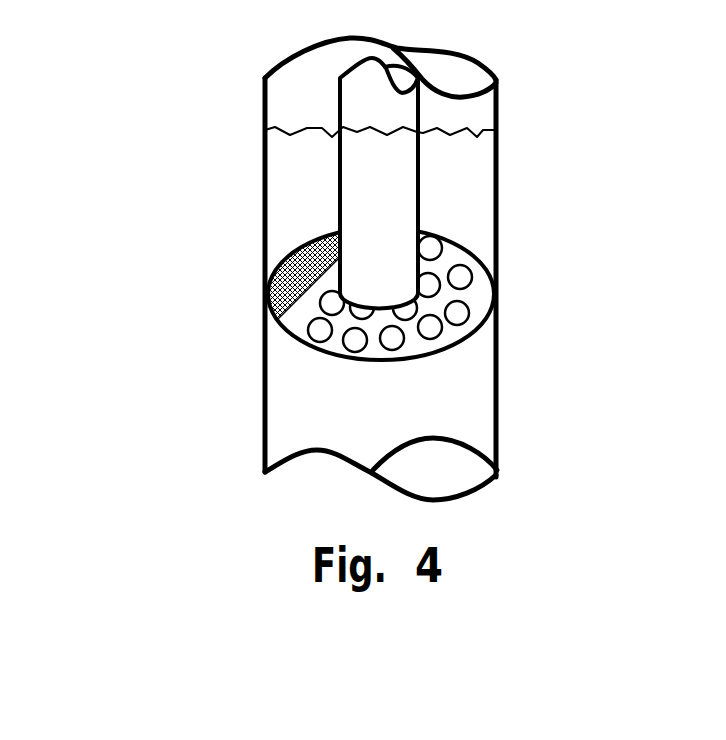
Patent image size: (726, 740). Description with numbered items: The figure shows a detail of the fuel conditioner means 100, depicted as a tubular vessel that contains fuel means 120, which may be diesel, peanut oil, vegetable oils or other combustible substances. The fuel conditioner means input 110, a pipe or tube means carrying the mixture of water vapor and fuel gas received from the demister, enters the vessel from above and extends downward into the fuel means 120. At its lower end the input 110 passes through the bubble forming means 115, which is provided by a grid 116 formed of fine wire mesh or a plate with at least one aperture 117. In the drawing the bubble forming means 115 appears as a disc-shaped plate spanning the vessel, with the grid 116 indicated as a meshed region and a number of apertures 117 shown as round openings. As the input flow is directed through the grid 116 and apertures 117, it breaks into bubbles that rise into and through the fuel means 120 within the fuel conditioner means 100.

The fuel conditioner means 100 is at (463, 403).
The fuel conditioner means input 110 is at (418, 178).
The bubble forming means 115 is at (292, 330).
The grid 116 is at (294, 252).
The aperture 117 is at (495, 368).
The fuel means 120 is at (458, 197).